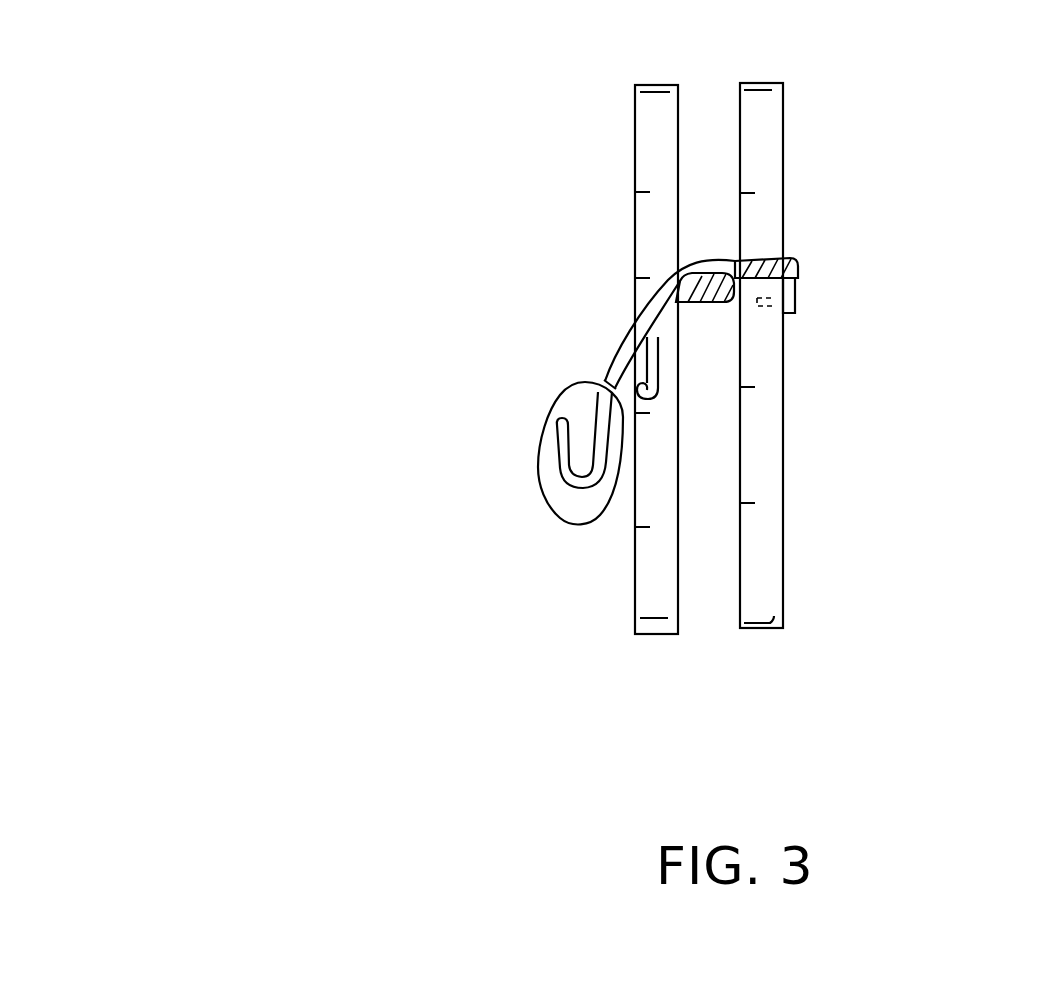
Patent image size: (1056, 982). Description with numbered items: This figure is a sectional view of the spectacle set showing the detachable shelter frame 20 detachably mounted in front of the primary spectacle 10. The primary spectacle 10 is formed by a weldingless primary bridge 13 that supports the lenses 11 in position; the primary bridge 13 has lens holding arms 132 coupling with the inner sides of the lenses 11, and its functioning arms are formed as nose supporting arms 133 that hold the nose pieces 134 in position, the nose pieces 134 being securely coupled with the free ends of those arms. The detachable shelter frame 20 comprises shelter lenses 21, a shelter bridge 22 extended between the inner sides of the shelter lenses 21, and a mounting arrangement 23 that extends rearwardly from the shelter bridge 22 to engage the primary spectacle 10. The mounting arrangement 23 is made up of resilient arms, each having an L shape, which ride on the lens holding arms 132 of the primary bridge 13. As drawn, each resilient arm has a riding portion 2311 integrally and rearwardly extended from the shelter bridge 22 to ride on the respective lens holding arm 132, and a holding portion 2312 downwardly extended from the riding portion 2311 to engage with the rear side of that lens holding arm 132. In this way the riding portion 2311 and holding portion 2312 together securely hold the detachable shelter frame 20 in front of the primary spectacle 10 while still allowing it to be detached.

The primary spectacle 10 is at (308, 535).
The lenses 11 is at (645, 598).
The primary bridge 13 is at (403, 585).
The lens holding arms 132 is at (710, 302).
The nose supporting arms 133 is at (612, 383).
The nose pieces 134 is at (568, 505).
The detachable shelter frame 20 is at (980, 180).
The shelter lenses 21 is at (762, 598).
The shelter bridge 22 is at (793, 258).
The mounting arrangement 23 is at (462, 136).
The riding portion 2311 is at (704, 266).
The holding portion 2312 is at (645, 347).